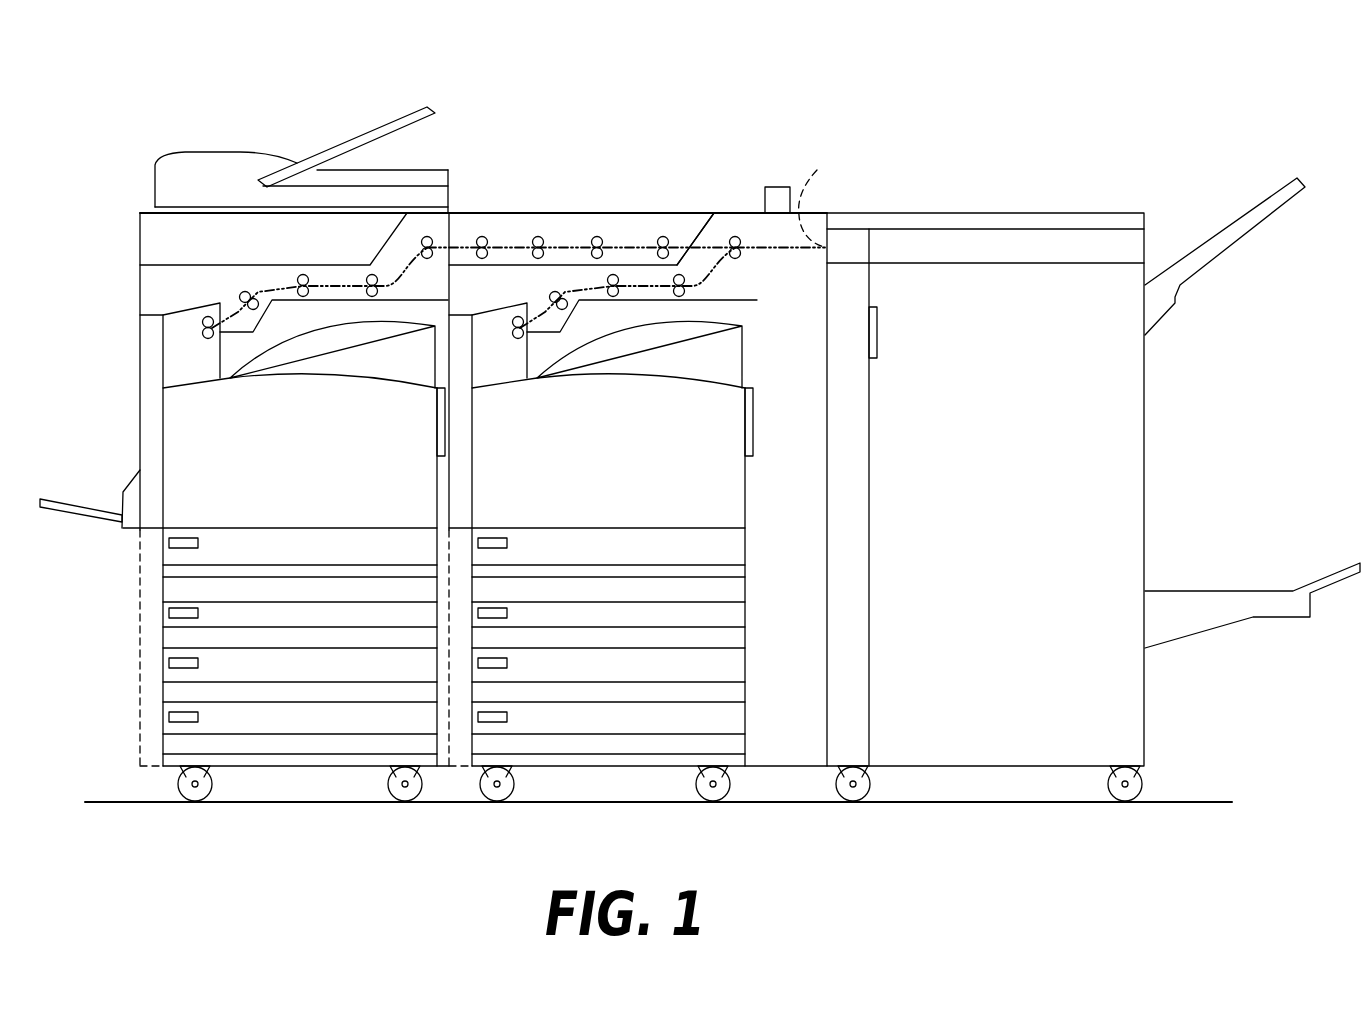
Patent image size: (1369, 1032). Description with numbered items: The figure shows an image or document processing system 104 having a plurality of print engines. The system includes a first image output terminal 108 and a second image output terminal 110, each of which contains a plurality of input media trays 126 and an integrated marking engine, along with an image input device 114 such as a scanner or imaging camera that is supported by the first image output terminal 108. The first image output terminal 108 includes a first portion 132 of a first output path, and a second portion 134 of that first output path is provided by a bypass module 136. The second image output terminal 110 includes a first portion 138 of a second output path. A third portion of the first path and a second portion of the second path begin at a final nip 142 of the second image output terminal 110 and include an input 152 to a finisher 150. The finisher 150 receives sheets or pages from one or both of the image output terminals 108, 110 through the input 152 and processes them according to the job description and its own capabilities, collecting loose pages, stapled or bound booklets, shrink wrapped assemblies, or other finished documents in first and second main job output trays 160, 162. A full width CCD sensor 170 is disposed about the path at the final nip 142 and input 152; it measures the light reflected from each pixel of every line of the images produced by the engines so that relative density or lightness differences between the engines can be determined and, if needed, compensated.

The document processing system 104 is at (1268, 85).
The first image output terminal 108 is at (316, 492).
The second image output terminal 110 is at (627, 492).
The image input device 114 is at (180, 157).
The input media trays 126 is at (305, 668).
The first portion of first output path 132 is at (347, 283).
The second portion of first output path 134 is at (567, 243).
The bypass module 136 is at (689, 213).
The first portion of second output path 138 is at (643, 279).
The final nip 142 is at (735, 236).
The finisher 150 is at (1021, 492).
The finisher input 152 is at (829, 190).
The first main job output tray 160 is at (1232, 248).
The second main job output tray 162 is at (1255, 618).
The full width CCD sensor 170 is at (779, 187).